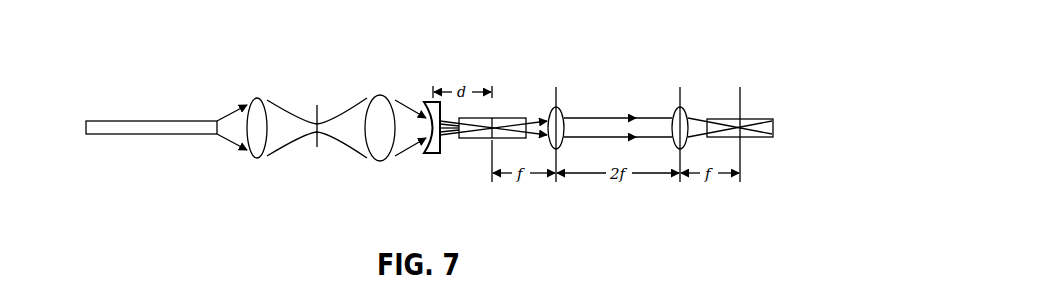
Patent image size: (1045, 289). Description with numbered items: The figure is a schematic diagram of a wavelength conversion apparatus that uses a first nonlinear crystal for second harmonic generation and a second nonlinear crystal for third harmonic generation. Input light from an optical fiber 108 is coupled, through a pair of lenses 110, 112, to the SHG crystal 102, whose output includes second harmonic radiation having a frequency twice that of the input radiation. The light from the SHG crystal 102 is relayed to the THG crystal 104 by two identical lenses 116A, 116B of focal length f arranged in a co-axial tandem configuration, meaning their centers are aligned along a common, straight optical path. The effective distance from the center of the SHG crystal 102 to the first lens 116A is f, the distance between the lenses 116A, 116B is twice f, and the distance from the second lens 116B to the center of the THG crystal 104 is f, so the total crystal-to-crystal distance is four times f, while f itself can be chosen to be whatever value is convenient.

The optical fiber 108 is at (127, 124).
The collimating lens 110 is at (256, 98).
The focusing lens 112 is at (383, 95).
The SHG crystal 102 is at (505, 118).
The first lens 116A is at (559, 107).
The second lens 116B is at (684, 107).
The THG crystal 104 is at (751, 120).